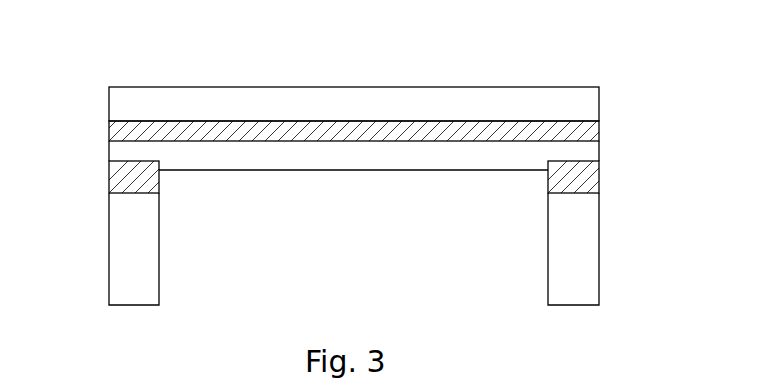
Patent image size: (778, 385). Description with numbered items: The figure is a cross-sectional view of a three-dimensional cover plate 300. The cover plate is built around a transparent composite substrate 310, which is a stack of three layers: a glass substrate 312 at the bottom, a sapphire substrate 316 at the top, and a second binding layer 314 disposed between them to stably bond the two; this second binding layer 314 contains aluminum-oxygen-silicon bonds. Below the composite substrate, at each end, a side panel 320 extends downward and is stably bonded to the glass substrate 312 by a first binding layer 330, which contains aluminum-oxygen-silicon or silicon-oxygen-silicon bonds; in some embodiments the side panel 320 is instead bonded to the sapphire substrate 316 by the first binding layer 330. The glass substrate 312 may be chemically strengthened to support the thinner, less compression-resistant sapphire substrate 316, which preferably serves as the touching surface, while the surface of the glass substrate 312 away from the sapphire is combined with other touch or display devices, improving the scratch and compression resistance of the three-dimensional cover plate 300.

The three-dimensional cover plate 300 is at (61, 48).
The transparent composite substrate 310 is at (712, 90).
The glass substrate 312 is at (587, 155).
The second binding layer 314 is at (586, 128).
The sapphire substrate 316 is at (587, 106).
The side panel 320 is at (585, 252).
The first binding layer 330 is at (587, 181).